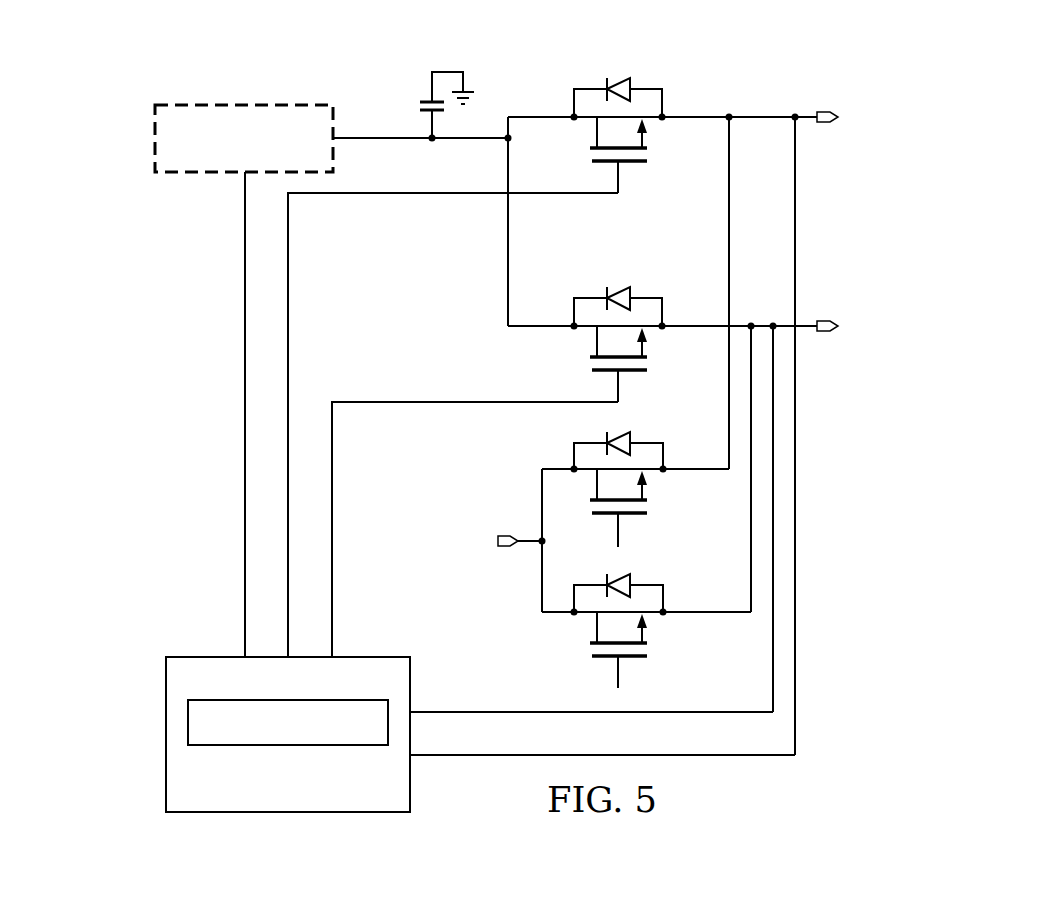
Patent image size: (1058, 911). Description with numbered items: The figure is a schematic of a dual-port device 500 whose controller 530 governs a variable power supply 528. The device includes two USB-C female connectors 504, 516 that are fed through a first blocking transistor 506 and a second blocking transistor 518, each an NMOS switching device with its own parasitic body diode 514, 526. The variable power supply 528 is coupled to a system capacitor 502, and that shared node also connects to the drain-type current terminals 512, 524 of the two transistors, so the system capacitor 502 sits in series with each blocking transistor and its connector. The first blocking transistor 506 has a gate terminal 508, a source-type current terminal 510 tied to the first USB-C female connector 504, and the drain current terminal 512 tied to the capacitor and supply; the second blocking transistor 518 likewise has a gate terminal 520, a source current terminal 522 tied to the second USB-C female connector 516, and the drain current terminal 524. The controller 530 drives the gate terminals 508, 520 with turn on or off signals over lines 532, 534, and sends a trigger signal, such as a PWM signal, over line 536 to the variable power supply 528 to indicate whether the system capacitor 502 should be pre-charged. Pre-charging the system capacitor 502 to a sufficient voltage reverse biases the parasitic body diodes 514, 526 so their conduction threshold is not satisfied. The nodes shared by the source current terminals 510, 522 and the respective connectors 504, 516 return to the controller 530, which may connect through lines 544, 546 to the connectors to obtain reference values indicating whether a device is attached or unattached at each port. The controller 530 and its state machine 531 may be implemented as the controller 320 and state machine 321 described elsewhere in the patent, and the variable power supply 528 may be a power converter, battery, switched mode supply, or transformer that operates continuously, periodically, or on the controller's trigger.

The dual-port device 500 is at (124, 266).
The system capacitor 502 is at (419, 106).
The first USB-C female connector 504 is at (817, 110).
The first blocking transistor 506 is at (653, 62).
The gate terminal 508 is at (620, 178).
The current terminal (source terminal) 510 is at (644, 140).
The current terminal (drain terminal) 512 is at (596, 135).
The first parasitic body diode 514 is at (618, 80).
The second USB-C female connector 516 is at (817, 319).
The second blocking transistor 518 is at (653, 272).
The gate terminal 520 is at (620, 388).
The current terminal (source terminal) 522 is at (644, 350).
The current terminal (drain terminal) 524 is at (596, 344).
The second parasitic body diode 526 is at (618, 290).
The variable power supply 528 is at (220, 104).
The controller 320 is at (221, 734).
The controller 530 is at (156, 735).
The state machine 321 is at (288, 751).
The state machine 531 is at (289, 746).
The line 532 is at (289, 376).
The line 534 is at (333, 613).
The line 536 is at (244, 614).
The VBUS_B sense line 544 is at (772, 656).
The VBUS_A sense line 546 is at (796, 678).